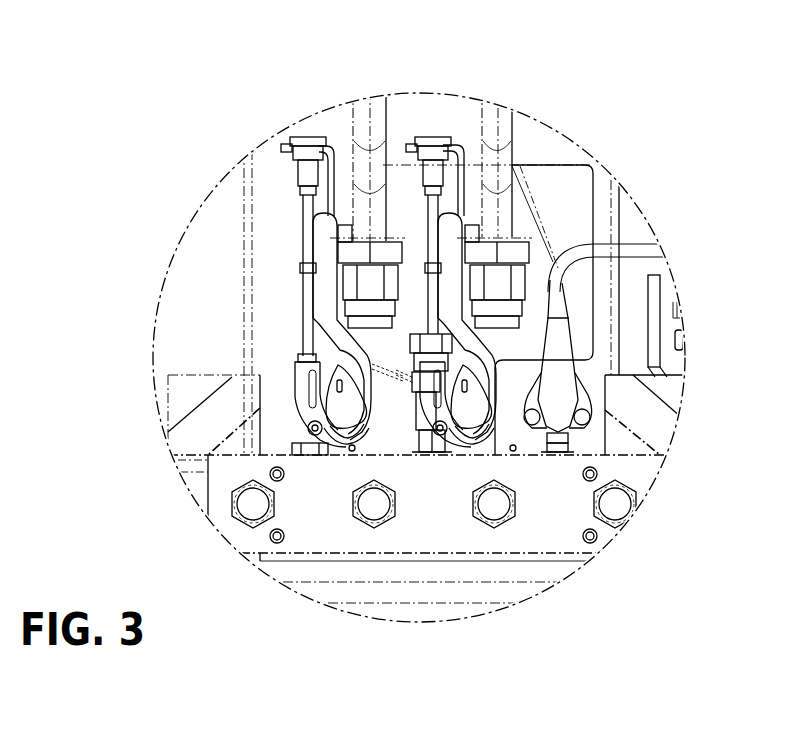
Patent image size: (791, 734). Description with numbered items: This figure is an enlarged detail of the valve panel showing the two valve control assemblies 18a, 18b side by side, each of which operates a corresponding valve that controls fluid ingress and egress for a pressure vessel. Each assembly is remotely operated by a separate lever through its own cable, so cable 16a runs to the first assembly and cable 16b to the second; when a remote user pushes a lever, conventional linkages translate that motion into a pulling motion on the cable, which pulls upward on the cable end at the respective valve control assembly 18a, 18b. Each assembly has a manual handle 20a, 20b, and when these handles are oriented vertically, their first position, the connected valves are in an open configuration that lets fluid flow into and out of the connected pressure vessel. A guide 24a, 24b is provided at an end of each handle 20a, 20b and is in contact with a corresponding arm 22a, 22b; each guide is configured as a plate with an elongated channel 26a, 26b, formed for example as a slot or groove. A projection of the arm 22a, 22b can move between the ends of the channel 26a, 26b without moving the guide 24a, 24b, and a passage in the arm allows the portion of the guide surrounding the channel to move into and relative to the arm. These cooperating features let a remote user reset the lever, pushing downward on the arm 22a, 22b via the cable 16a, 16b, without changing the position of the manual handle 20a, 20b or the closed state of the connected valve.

The cable 16a is at (305, 205).
The cable 16b is at (430, 208).
The valve control assembly 18a is at (335, 132).
The valve control assembly 18b is at (457, 143).
The manual handle 20a is at (327, 245).
The manual handle 20b is at (450, 256).
The arm 22a is at (298, 375).
The arm 22b is at (425, 393).
The guide 24a is at (333, 412).
The guide 24b is at (467, 405).
The channel 26a is at (345, 437).
The channel 26b is at (480, 433).